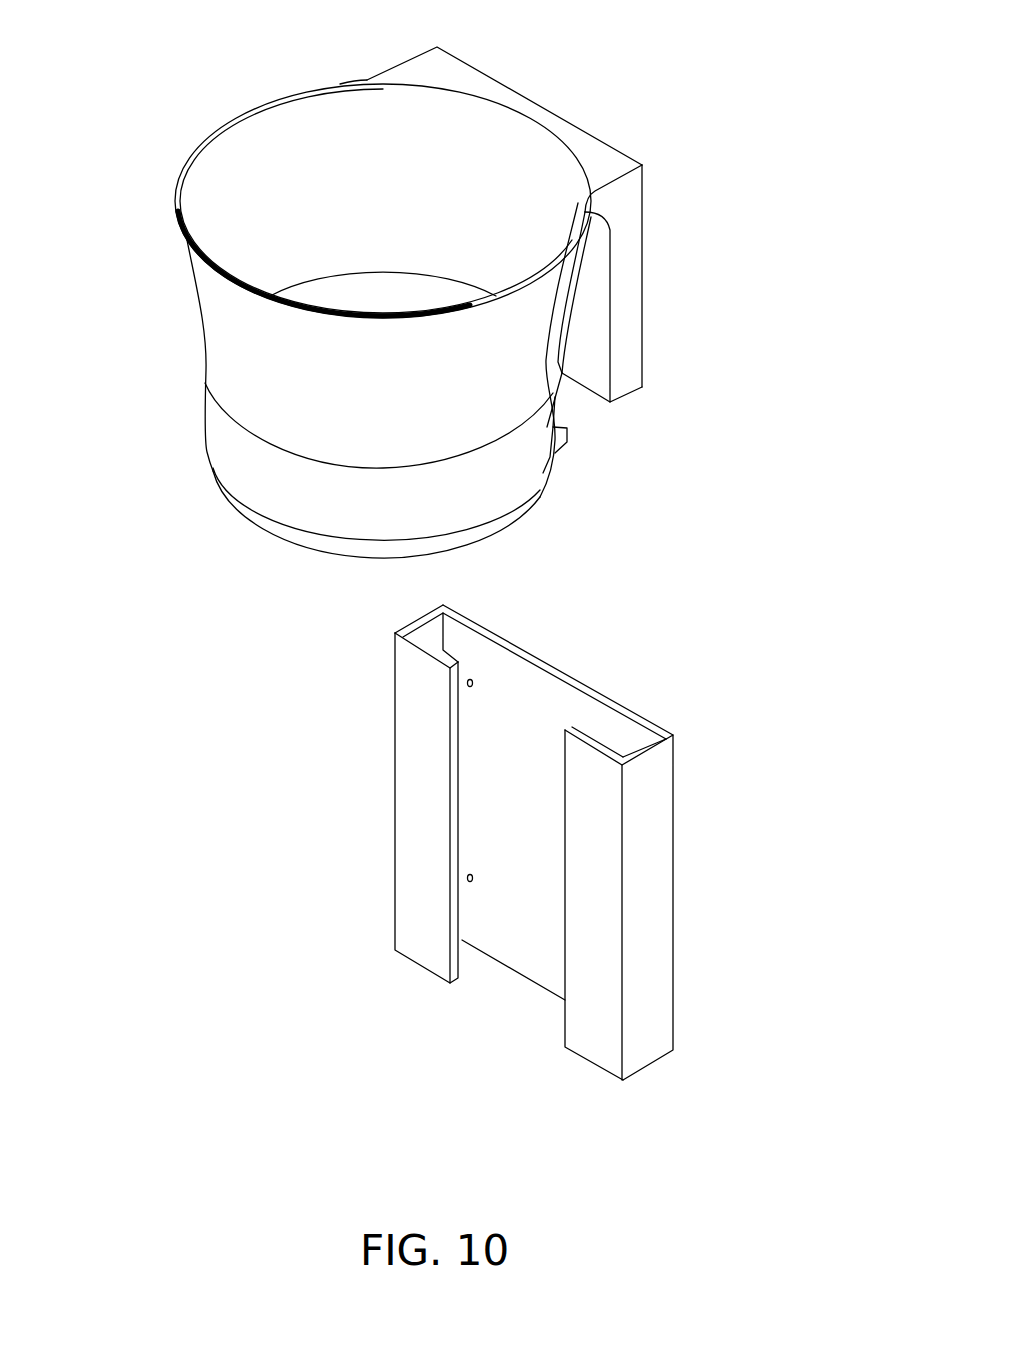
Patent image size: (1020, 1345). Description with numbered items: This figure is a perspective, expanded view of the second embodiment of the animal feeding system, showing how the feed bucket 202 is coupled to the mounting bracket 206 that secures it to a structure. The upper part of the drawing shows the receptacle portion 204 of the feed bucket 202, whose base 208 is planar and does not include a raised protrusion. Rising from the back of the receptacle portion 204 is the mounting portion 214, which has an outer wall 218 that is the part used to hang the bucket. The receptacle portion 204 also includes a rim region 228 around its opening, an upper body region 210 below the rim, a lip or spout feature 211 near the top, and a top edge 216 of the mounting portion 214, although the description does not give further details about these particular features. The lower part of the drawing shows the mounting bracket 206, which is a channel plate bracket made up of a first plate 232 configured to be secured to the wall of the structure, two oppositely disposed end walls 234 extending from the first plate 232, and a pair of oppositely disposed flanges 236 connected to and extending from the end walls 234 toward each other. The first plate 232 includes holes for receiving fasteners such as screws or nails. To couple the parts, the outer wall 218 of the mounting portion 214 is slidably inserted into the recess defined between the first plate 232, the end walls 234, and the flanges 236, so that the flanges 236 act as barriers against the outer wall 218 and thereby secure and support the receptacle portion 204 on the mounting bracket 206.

The feed bucket 202 is at (419, 302).
The receptacle portion 204 is at (205, 452).
The mounting bracket 206 is at (535, 849).
The base 208 is at (482, 540).
The upper body portion 210 is at (264, 344).
The spout lip 211 is at (362, 80).
The mounting portion 214 is at (554, 260).
The handle top edge 216 is at (615, 162).
The outer wall 218 is at (646, 316).
The rim 228 is at (197, 145).
The first plate 232 is at (526, 686).
The end walls 234 is at (430, 633).
The flanges 236 is at (423, 818).